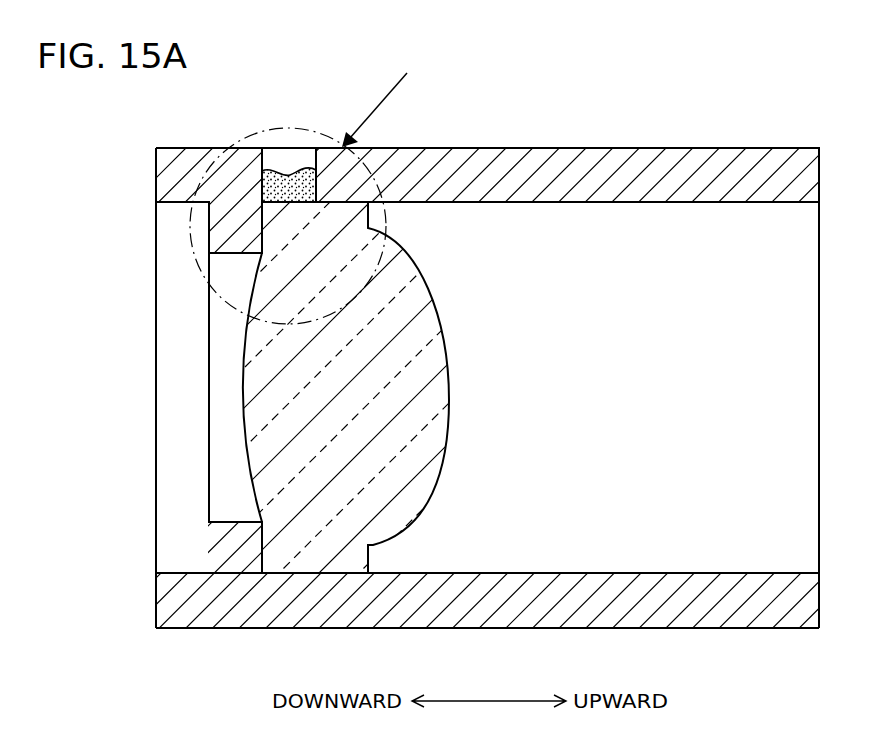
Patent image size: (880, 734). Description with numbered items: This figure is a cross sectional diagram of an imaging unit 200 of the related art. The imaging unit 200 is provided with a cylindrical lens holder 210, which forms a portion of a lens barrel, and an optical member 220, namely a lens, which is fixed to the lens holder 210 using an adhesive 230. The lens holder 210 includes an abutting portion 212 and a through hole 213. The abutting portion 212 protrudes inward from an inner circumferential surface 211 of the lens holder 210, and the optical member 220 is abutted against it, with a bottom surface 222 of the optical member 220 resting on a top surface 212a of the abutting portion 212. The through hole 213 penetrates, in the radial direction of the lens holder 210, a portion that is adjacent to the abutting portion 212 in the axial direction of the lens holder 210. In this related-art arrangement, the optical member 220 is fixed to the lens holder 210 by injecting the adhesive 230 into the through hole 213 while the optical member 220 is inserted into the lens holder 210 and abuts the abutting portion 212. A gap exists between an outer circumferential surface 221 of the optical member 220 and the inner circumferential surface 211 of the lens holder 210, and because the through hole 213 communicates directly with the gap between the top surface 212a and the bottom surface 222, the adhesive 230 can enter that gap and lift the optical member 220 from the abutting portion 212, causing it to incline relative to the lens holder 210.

The imaging unit 200 is at (614, 70).
The lens holder 210 is at (655, 160).
The inner circumferential surface 211 is at (705, 203).
The abutting portion 212 is at (220, 553).
The top surface of abutting portion 212a is at (263, 557).
The through hole 213 is at (270, 160).
The optical member 220 is at (437, 350).
The outer circumferential surface 221 is at (336, 575).
The bottom surface of optical member 222 is at (262, 538).
The adhesive 230 is at (297, 170).